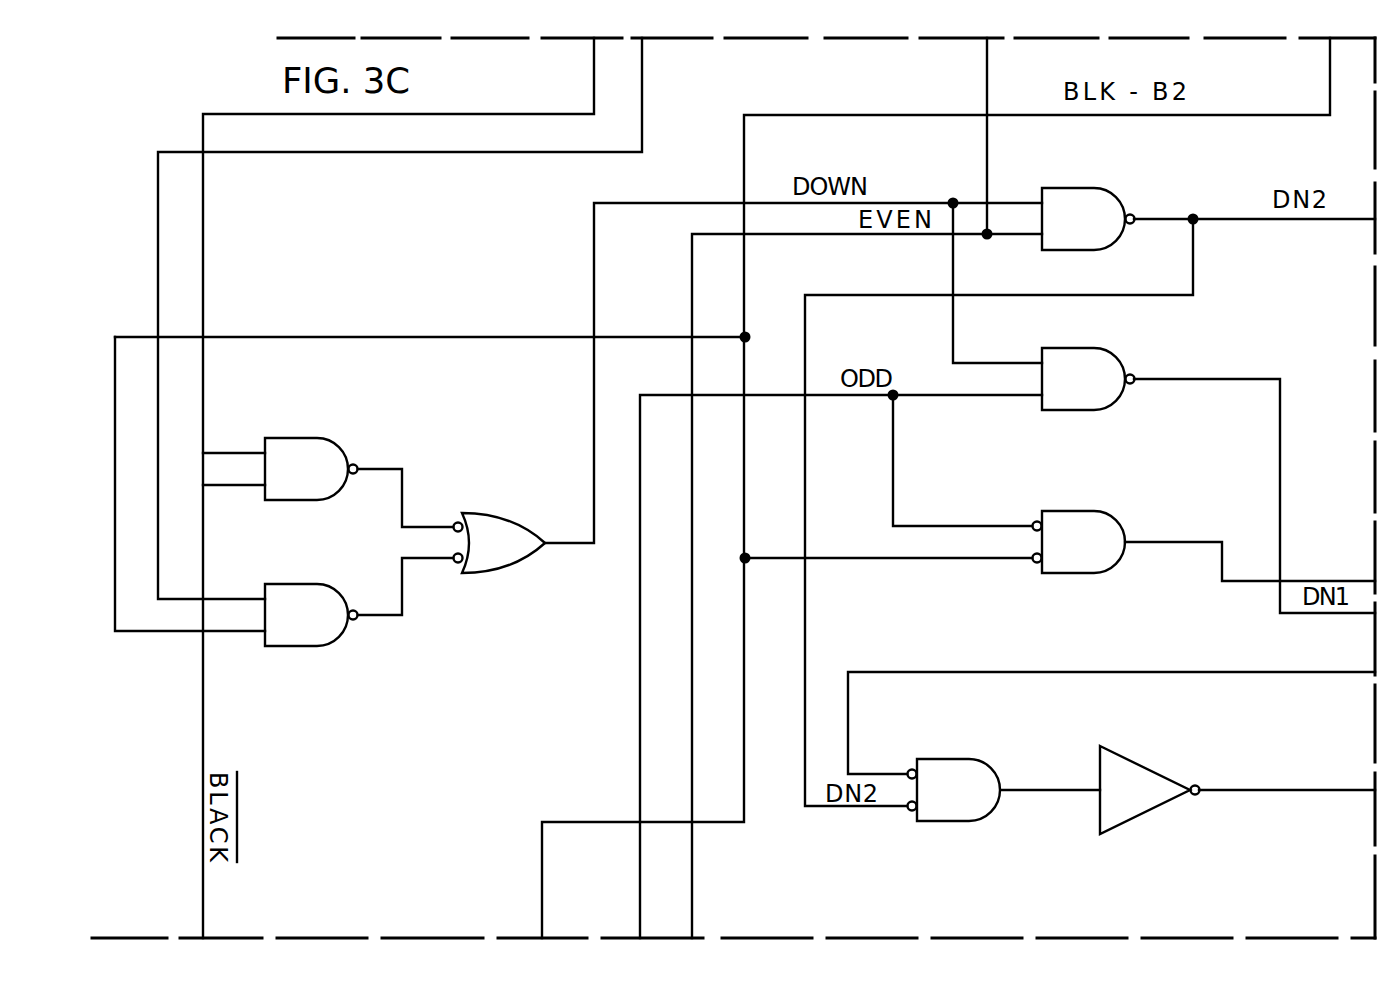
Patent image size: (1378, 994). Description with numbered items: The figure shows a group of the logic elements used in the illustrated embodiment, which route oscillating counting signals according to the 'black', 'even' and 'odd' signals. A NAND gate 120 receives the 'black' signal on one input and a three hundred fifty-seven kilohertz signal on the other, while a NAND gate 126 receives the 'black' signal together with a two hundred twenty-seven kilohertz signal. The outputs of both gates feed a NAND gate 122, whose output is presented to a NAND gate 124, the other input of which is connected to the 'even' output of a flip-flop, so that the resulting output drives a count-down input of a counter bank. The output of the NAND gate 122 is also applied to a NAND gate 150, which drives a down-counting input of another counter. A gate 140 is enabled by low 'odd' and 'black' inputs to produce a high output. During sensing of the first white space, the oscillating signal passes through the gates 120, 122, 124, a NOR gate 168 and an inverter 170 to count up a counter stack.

The NAND gate 120 is at (328, 438).
The NAND gate 122 is at (536, 471).
The NAND gate 124 is at (1097, 188).
The NAND gate 126 is at (330, 646).
The gate 140 is at (1112, 512).
The NAND gate 150 is at (1113, 353).
The NOR gate 168 is at (943, 759).
The inverter 170 is at (1137, 757).